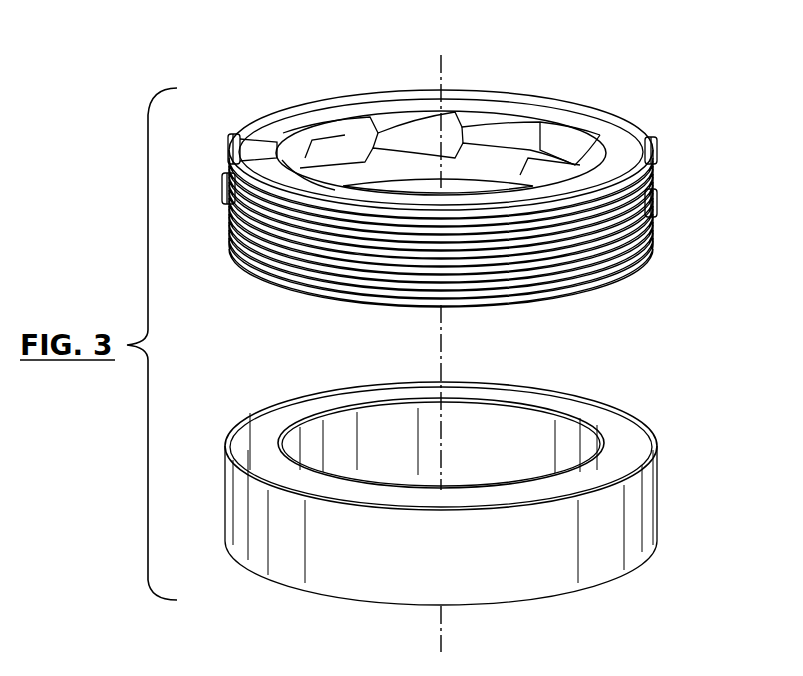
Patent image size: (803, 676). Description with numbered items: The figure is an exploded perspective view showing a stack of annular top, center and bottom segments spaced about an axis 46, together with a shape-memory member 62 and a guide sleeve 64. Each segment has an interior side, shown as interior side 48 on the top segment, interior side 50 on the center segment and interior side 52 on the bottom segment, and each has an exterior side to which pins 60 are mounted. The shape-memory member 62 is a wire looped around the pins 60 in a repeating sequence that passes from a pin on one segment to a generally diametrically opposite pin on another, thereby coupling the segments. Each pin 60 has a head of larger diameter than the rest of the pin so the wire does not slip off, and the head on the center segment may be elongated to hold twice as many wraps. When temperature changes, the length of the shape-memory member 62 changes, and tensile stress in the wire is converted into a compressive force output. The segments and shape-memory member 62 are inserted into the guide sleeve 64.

The axis 46 is at (441, 68).
The interior side 48 is at (590, 122).
The interior side 50 is at (573, 130).
The interior side 52 is at (520, 145).
The pins 60 is at (226, 148).
The shape-memory member 62 is at (598, 280).
The guide sleeve 64 is at (654, 431).